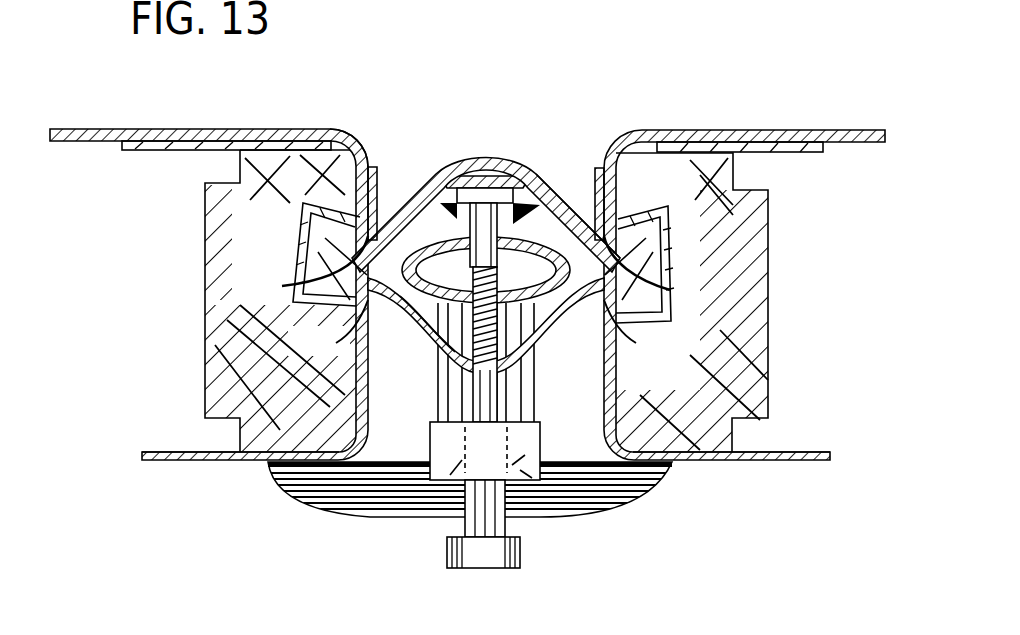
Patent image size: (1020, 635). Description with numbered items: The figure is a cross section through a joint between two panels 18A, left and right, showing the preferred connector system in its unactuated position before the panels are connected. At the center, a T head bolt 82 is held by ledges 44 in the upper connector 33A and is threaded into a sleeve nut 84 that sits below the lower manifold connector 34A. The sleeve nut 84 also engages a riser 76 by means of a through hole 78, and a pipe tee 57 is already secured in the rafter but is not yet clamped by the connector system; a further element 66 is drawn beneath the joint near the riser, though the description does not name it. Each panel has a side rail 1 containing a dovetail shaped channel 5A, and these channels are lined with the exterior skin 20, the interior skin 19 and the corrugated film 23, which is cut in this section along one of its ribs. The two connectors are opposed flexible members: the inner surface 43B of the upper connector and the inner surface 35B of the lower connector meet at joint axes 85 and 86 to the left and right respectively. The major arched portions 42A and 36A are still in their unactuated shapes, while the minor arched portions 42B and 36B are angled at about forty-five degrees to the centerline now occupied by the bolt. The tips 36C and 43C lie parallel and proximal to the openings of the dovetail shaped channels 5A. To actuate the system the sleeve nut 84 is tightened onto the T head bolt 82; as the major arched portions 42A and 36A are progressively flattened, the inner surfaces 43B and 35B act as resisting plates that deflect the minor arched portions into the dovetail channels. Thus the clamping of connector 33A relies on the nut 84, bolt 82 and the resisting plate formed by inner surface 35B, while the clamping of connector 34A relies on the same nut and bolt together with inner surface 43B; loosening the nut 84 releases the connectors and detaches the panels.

The side rail 1 is at (215, 397).
The dovetail shaped channel 5A is at (323, 283).
The panel 18A is at (155, 331).
The interior skin 19 is at (158, 460).
The exterior skin 20 is at (142, 148).
The corrugated film 23 is at (82, 129).
The connector 33A is at (418, 195).
The manifold connector 34A is at (542, 357).
The inner surface 35B is at (617, 362).
The major arched portion 36A is at (420, 346).
The minor arched portion 36B is at (357, 333).
The tip 36C is at (624, 318).
The major arched portion 42A is at (443, 168).
The minor arched portion 42B is at (355, 213).
The inner surface 43B is at (560, 186).
The tip 43C is at (642, 233).
The ledge 44 is at (532, 176).
The pipe tee 57 is at (450, 396).
The base disc 66 is at (607, 487).
The riser 76 is at (523, 463).
The through hole 78 is at (437, 500).
The T head bolt 82 is at (500, 158).
The sleeve nut 84 is at (482, 550).
The joint axis 85 is at (313, 257).
The joint axis 86 is at (673, 282).